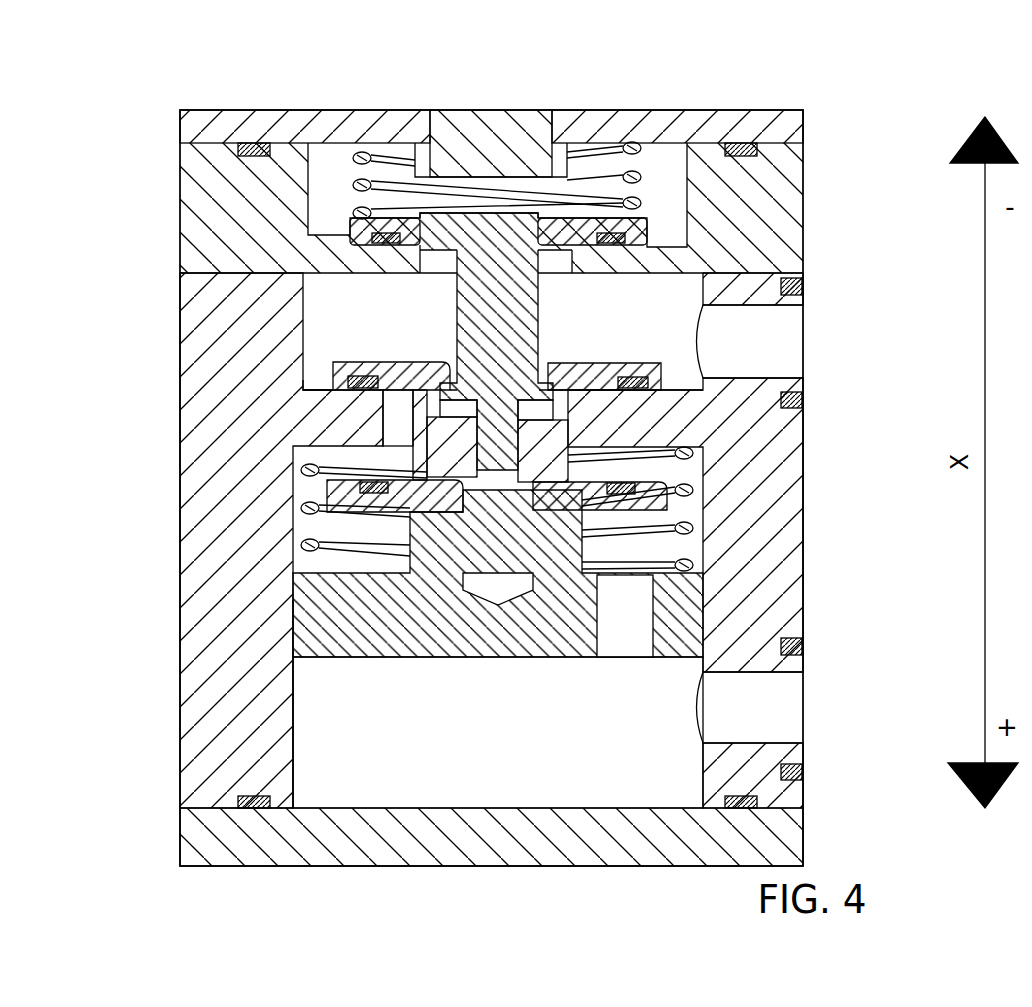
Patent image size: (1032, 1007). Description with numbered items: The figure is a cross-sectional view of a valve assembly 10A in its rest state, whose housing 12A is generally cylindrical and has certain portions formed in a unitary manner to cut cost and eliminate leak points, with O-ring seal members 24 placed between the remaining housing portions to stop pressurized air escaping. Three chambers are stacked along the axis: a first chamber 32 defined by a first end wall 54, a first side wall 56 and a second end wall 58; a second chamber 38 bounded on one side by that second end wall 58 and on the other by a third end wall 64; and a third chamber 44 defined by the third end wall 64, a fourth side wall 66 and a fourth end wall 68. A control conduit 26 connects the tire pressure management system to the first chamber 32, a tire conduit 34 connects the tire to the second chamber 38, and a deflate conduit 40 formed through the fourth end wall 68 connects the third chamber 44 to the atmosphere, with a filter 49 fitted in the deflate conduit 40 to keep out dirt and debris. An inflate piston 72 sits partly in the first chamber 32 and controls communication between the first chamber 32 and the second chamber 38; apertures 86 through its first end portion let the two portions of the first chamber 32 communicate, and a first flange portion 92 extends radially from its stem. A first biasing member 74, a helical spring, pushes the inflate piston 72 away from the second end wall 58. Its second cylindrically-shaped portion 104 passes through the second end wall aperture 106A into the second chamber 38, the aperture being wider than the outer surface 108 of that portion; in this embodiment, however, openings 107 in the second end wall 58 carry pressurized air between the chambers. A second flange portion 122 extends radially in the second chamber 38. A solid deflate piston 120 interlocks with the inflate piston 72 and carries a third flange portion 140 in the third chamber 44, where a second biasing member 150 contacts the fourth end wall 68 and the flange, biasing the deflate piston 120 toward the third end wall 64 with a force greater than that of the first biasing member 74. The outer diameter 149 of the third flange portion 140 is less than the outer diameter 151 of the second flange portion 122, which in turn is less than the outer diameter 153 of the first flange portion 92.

The valve assembly 10A is at (845, 95).
The housing 12A is at (185, 628).
The seal member 24 is at (255, 110).
The control conduit 26 is at (800, 690).
The first chamber 32 is at (459, 771).
The tire conduit 34 is at (790, 318).
The second chamber 38 is at (352, 320).
The deflate conduit 40 is at (565, 110).
The third chamber 44 is at (316, 206).
The filter 49 is at (483, 110).
The first end wall 54 is at (423, 866).
The first side wall 56 is at (283, 737).
The second end wall 58 is at (303, 388).
The third end wall 64 is at (303, 295).
The fourth side wall 66 is at (185, 165).
The fourth end wall 68 is at (338, 110).
The inflate piston 72 is at (383, 645).
The first biasing member 74 is at (300, 547).
The aperture 86 is at (605, 652).
The first flange portion 92 is at (575, 452).
The second cylindrically-shaped portion 104 is at (553, 410).
The second end wall aperture 106A is at (437, 407).
The opening 107 is at (300, 478).
The outer surface 108 is at (557, 432).
The deflate piston 120 is at (457, 284).
The second flange portion 122 is at (572, 362).
The third flange portion 140 is at (643, 208).
The outer diameter of the third flange portion 149 is at (625, 232).
The second biasing member 150 is at (355, 183).
The outer diameter of the second flange portion 151 is at (660, 375).
The outer diameter of the first flange portion 153 is at (690, 500).